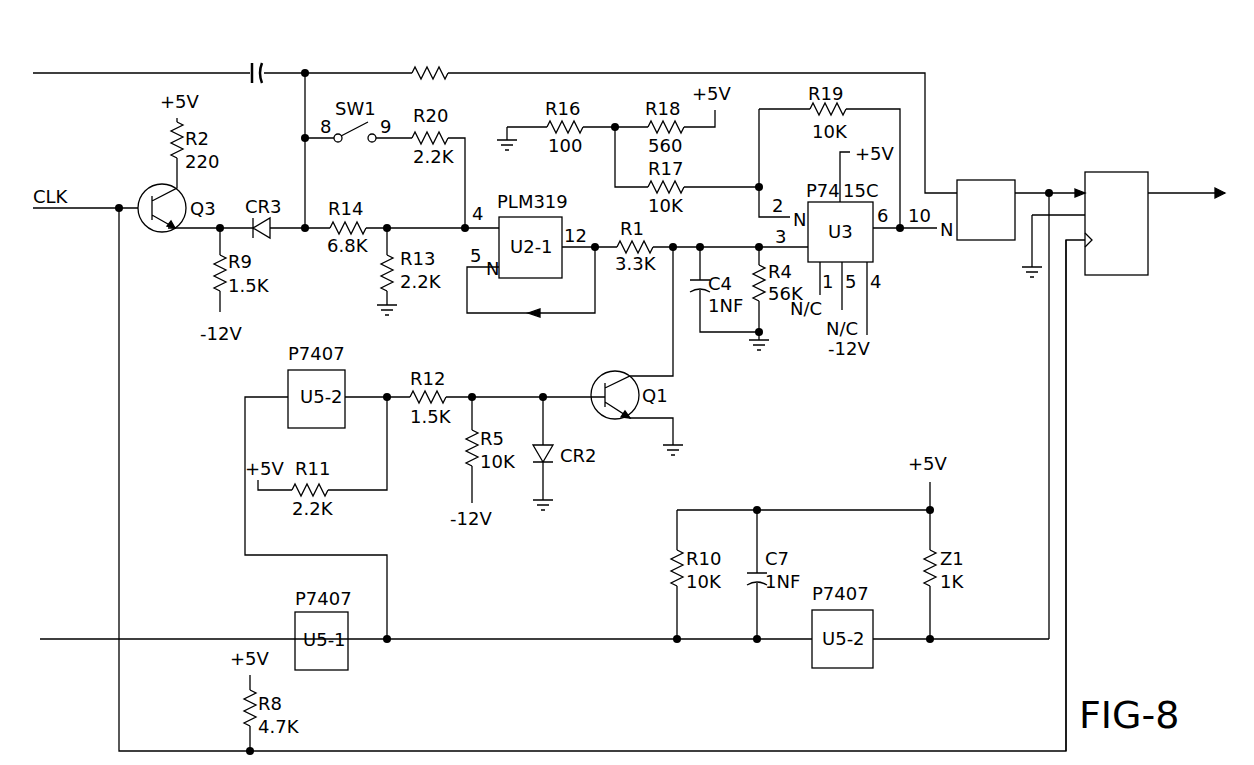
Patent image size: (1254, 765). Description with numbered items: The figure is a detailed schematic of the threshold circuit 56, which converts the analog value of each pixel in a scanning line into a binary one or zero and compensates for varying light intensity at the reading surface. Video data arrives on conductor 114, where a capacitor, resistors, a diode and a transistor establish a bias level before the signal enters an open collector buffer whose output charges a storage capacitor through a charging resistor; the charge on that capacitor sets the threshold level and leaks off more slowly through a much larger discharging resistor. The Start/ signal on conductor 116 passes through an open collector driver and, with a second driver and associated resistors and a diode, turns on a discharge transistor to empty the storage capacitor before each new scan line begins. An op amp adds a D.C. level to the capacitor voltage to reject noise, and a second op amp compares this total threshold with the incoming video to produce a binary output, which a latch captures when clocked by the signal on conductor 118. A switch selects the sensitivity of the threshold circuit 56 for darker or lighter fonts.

The conductor 114 is at (170, 73).
The conductor 116 is at (92, 650).
The conductor 118 is at (1067, 662).
The threshold circuit 56 is at (1028, 120).